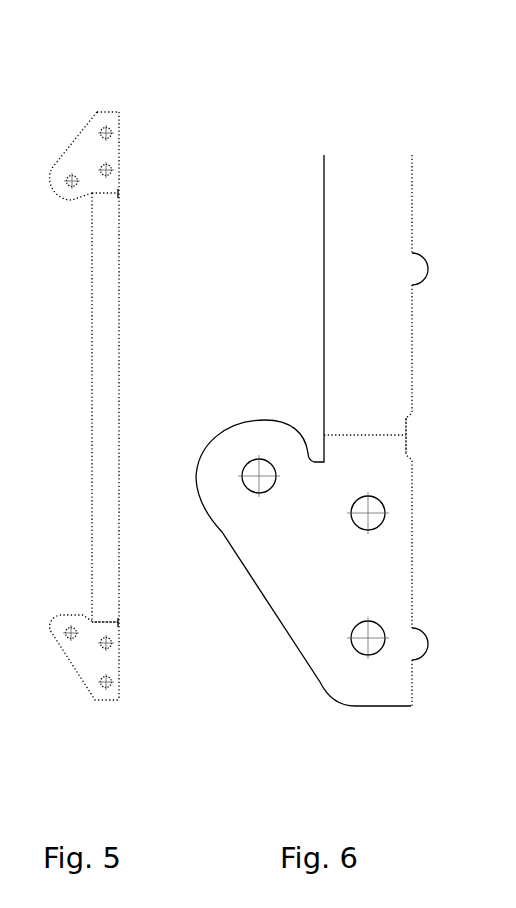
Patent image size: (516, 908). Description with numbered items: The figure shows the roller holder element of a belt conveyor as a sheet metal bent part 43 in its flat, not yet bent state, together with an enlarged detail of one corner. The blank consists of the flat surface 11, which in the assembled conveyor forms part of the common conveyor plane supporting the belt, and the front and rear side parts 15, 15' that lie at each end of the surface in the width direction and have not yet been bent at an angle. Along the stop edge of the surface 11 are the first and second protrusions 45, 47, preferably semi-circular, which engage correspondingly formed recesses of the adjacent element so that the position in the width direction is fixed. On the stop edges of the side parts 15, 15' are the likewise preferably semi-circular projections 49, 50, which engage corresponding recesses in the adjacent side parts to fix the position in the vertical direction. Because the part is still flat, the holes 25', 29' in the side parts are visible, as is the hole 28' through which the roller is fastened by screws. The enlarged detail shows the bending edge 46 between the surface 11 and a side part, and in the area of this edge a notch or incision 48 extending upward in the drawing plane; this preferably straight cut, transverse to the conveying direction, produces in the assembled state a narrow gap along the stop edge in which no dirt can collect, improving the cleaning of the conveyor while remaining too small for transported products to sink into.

In FIG. 5, the sheet metal bent part 43 is at (98, 83).
In FIG. 5, the projection 50 is at (120, 130).
In FIG. 5, the side part 15' is at (132, 156).
In FIG. 5, the first protrusion 45 is at (120, 245).
In FIG. 5, the flat surface 11 is at (118, 338).
In FIG. 5, the second protrusion 47 is at (120, 573).
In FIG. 6, the second protrusion 47 is at (427, 276).
In FIG. 5, the side part 15 is at (131, 657).
In FIG. 5, the projection 49 is at (120, 683).
In FIG. 6, the projection 49 is at (421, 632).
In FIG. 6, the bending edge 46 is at (368, 436).
In FIG. 6, the notch or incision 48 is at (405, 438).
In FIG. 6, the hole 25' is at (418, 508).
In FIG. 6, the hole 29' is at (203, 475).
In FIG. 6, the hole 28' is at (308, 669).